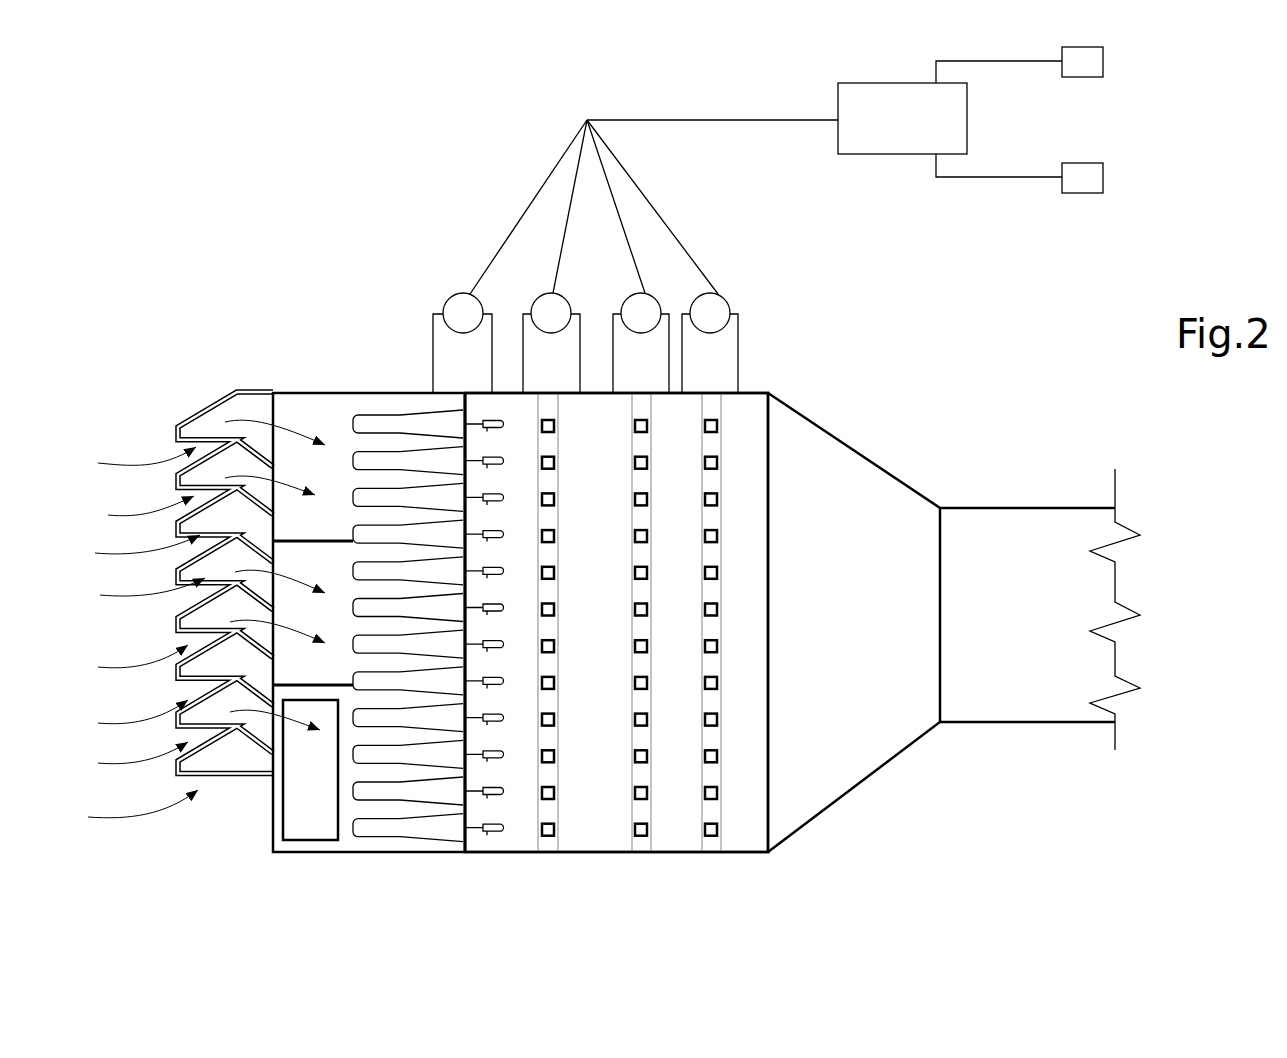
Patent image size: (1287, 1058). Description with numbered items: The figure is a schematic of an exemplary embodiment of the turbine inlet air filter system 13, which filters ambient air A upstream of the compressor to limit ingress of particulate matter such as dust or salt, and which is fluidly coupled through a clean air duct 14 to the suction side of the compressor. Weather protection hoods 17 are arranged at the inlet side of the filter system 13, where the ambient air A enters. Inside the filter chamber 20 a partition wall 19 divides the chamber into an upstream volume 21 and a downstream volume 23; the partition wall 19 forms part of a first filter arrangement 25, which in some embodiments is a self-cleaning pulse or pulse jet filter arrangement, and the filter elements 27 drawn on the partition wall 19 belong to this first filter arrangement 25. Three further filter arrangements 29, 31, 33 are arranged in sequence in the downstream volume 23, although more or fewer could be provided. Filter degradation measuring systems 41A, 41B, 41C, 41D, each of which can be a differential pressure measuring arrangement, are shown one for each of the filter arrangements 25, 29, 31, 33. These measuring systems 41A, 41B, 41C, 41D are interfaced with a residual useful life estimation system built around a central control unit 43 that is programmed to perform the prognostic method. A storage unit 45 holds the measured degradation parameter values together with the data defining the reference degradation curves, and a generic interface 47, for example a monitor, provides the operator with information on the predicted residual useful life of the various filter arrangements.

The turbine inlet air filter system 13 is at (287, 858).
The clean air duct 14 is at (1027, 522).
The weather protection hoods 17 is at (203, 412).
The partition wall 19 is at (460, 404).
The filter chamber 20 is at (670, 853).
The upstream volume 21 is at (307, 414).
The downstream volume 23 is at (612, 587).
The first filter arrangement 25 is at (380, 858).
The filter cartridges 27 is at (397, 430).
The filter arrangement 29 is at (548, 853).
The filter arrangement 31 is at (641, 853).
The filter arrangement 33 is at (710, 853).
The filter degradation measuring system 41A is at (447, 299).
The filter degradation measuring system 41B is at (536, 299).
The filter degradation measuring system 41C is at (625, 299).
The filter degradation measuring system 41D is at (723, 299).
The central control unit 43 is at (913, 131).
The storage unit 45 is at (1100, 58).
The interface 47 is at (1098, 175).
The ambient air A is at (127, 463).